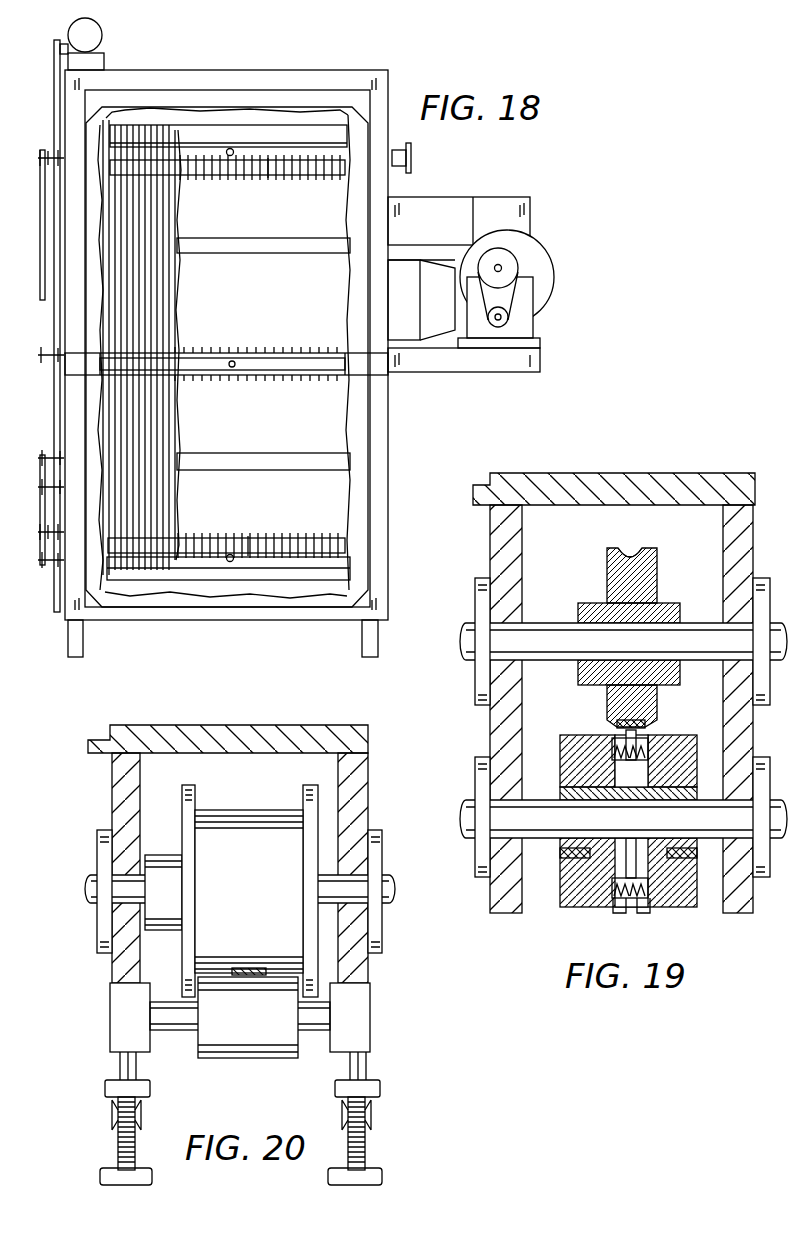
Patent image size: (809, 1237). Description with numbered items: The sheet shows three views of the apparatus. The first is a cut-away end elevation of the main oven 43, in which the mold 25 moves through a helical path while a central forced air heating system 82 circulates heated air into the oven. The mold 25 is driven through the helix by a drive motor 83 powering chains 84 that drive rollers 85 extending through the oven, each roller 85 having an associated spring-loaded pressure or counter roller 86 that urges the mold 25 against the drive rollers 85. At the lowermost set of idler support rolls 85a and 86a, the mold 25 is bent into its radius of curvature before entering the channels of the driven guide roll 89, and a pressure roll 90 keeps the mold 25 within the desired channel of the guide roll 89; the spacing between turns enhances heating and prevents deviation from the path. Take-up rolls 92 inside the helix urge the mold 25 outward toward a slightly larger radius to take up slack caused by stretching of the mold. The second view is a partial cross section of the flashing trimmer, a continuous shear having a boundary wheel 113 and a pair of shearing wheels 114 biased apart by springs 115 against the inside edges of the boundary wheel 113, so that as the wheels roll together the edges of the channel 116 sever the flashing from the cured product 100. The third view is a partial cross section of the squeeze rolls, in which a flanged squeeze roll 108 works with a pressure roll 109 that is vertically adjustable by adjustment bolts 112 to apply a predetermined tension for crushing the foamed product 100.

In FIG. 18, the mold 25 is at (145, 303).
In FIG. 18, the main oven 43 is at (298, 76).
In FIG. 18, the central forced air heating system 82 is at (543, 265).
In FIG. 18, the drive motor 83 is at (102, 35).
In FIG. 18, the chains 84 is at (52, 152).
In FIG. 18, the drive rollers 85 is at (257, 352).
In FIG. 18, the idler support rolls 85a is at (218, 137).
In FIG. 18, the pressure or counter roller 86 is at (193, 350).
In FIG. 18, the idler support rolls 86a is at (165, 120).
In FIG. 18, the guide roll 89 is at (271, 172).
In FIG. 18, the pressure roll 90 is at (209, 160).
In FIG. 18, the take-up rolls 92 is at (226, 245).
In FIG. 19, the cured product 100 is at (641, 727).
In FIG. 20, the cured product 100 is at (258, 967).
In FIG. 20, the flanged squeeze roll 108 is at (268, 891).
In FIG. 20, the pressure roll 109 is at (270, 1021).
In FIG. 20, the adjustment bolts 112 is at (118, 1153).
In FIG. 19, the boundary wheel 113 is at (607, 578).
In FIG. 19, the shearing wheels 114 is at (565, 748).
In FIG. 19, the springs 115 is at (606, 740).
In FIG. 19, the channel 116 is at (632, 557).